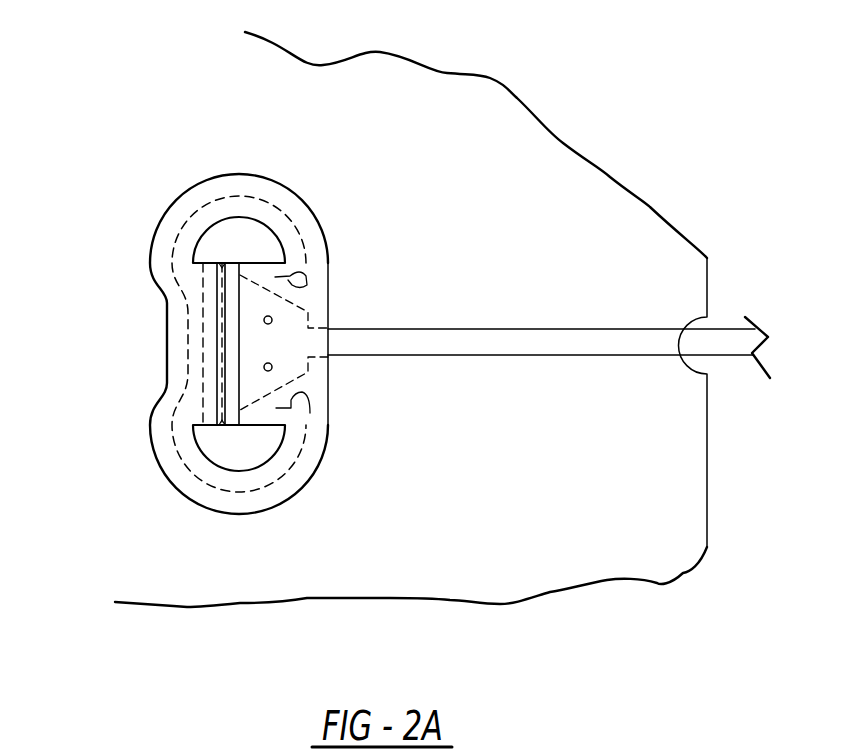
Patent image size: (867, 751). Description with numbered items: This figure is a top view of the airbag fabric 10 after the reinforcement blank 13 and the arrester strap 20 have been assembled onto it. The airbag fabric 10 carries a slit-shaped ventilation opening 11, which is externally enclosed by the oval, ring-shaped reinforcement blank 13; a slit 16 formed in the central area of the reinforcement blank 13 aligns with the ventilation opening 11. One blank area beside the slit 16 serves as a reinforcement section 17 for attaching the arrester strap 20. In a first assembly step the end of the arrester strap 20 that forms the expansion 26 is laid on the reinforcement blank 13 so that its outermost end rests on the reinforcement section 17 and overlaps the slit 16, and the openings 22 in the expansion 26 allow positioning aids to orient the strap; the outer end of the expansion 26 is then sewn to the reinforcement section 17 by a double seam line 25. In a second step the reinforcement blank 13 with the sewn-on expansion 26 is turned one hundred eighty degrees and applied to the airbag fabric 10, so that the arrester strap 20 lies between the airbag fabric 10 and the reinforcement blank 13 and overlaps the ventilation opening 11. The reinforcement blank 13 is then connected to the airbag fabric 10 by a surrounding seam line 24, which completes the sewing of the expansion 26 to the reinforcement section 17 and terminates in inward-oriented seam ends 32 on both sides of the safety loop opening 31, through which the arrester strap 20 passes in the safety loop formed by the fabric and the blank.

The airbag fabric 10 is at (587, 200).
The slit-shaped ventilation opening 11 is at (150, 242).
The reinforcement blank 13 is at (180, 473).
The slit 16 is at (240, 300).
The reinforcement section 17 is at (195, 332).
The arrester strap 20 is at (557, 329).
The openings 22 is at (268, 371).
The surrounding seam line 24 is at (268, 203).
The double seam line 25 is at (222, 357).
The expansion 26 is at (292, 360).
The safety loop opening 31 is at (292, 298).
The seam ends 32 is at (290, 283).